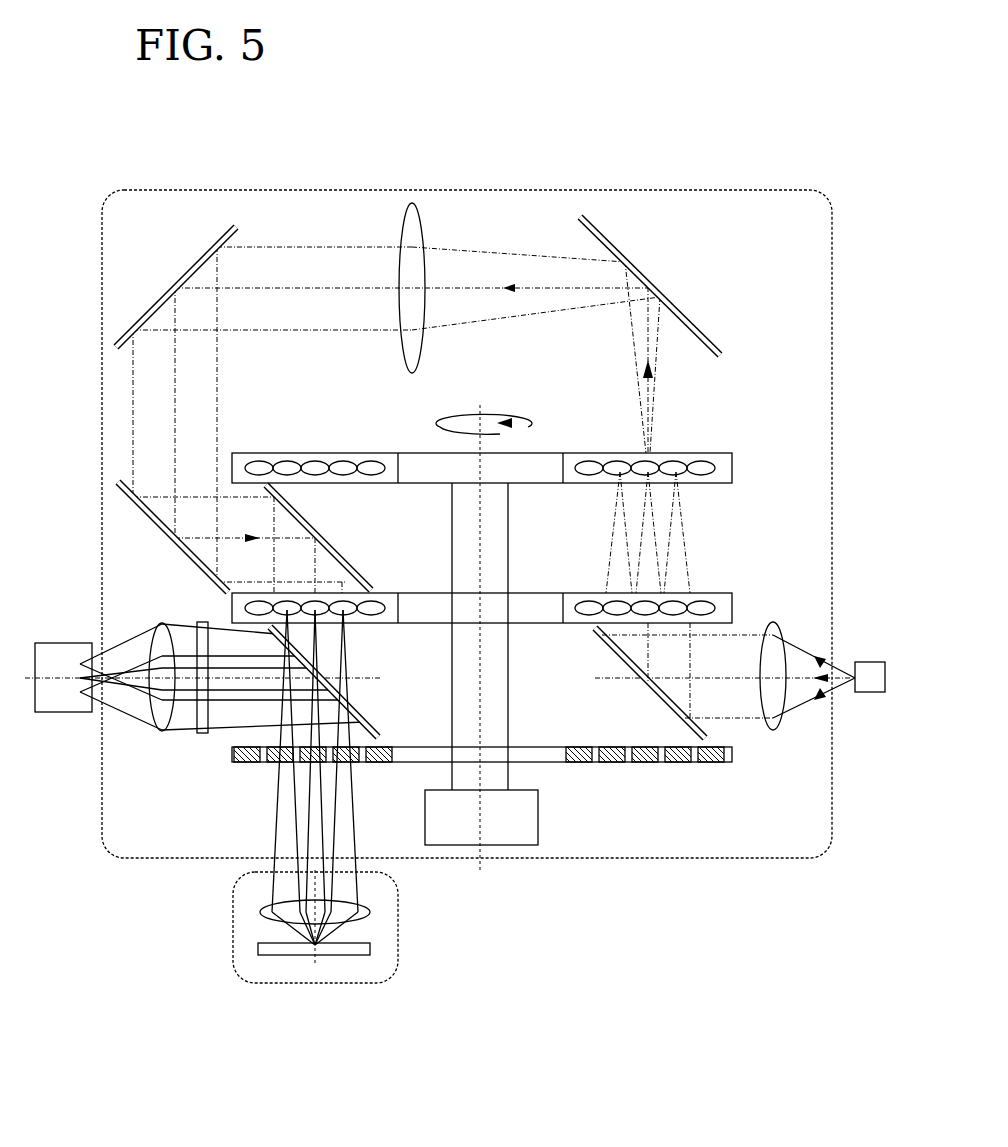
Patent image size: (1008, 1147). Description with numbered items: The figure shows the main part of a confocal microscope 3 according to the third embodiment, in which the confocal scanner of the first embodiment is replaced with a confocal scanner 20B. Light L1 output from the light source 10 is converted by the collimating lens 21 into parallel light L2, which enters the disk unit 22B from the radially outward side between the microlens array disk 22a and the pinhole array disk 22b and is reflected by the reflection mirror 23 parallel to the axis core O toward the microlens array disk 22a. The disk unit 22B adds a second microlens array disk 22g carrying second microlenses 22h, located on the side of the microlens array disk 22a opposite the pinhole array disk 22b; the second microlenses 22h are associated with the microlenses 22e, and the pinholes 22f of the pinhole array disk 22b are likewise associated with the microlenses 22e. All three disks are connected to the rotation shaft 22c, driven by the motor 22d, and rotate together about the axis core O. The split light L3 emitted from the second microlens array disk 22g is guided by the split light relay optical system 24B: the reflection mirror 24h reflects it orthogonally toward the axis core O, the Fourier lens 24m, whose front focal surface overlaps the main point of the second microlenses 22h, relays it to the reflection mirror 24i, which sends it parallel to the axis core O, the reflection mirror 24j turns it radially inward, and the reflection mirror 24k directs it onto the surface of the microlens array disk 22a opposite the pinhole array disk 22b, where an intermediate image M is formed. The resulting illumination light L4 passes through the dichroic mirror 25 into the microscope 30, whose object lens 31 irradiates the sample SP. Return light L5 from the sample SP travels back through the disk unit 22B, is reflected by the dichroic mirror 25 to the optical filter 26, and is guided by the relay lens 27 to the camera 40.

The confocal microscope 3 is at (797, 77).
The confocal scanner 20B is at (288, 190).
The split light relay optical system 24B is at (735, 305).
The Fourier lens 24m is at (413, 203).
The reflection mirror 24i is at (185, 262).
The reflection mirror 24h is at (640, 270).
The reflection mirror 24j is at (118, 485).
The reflection mirror 24k is at (366, 582).
The disk unit 22B is at (574, 430).
The axis core O is at (485, 415).
The second microlens array disk 22g is at (738, 470).
The second microlenses 22h is at (650, 458).
The microlens array disk 22a is at (738, 605).
The microlenses 22e is at (320, 590).
The intermediate image M is at (287, 598).
The rotation shaft 22c is at (530, 765).
The pinholes 22f is at (360, 765).
The motor 22d is at (540, 830).
The camera 40 is at (65, 643).
The return light L5 is at (232, 722).
The relay lens 27 is at (160, 735).
The optical filter 26 is at (202, 736).
The dichroic mirror 25 is at (365, 722).
The illumination light L4 is at (356, 838).
The reflection mirror 23 is at (618, 652).
The light L1 is at (833, 698).
The parallel light L2 is at (775, 622).
The collimating lens 21 is at (787, 725).
The pinhole array disk 22b is at (735, 758).
The light source 10 is at (870, 662).
The microscope 30 is at (233, 925).
The object lens 31 is at (370, 905).
The sample SP is at (372, 948).
The split light L3 is at (660, 405).